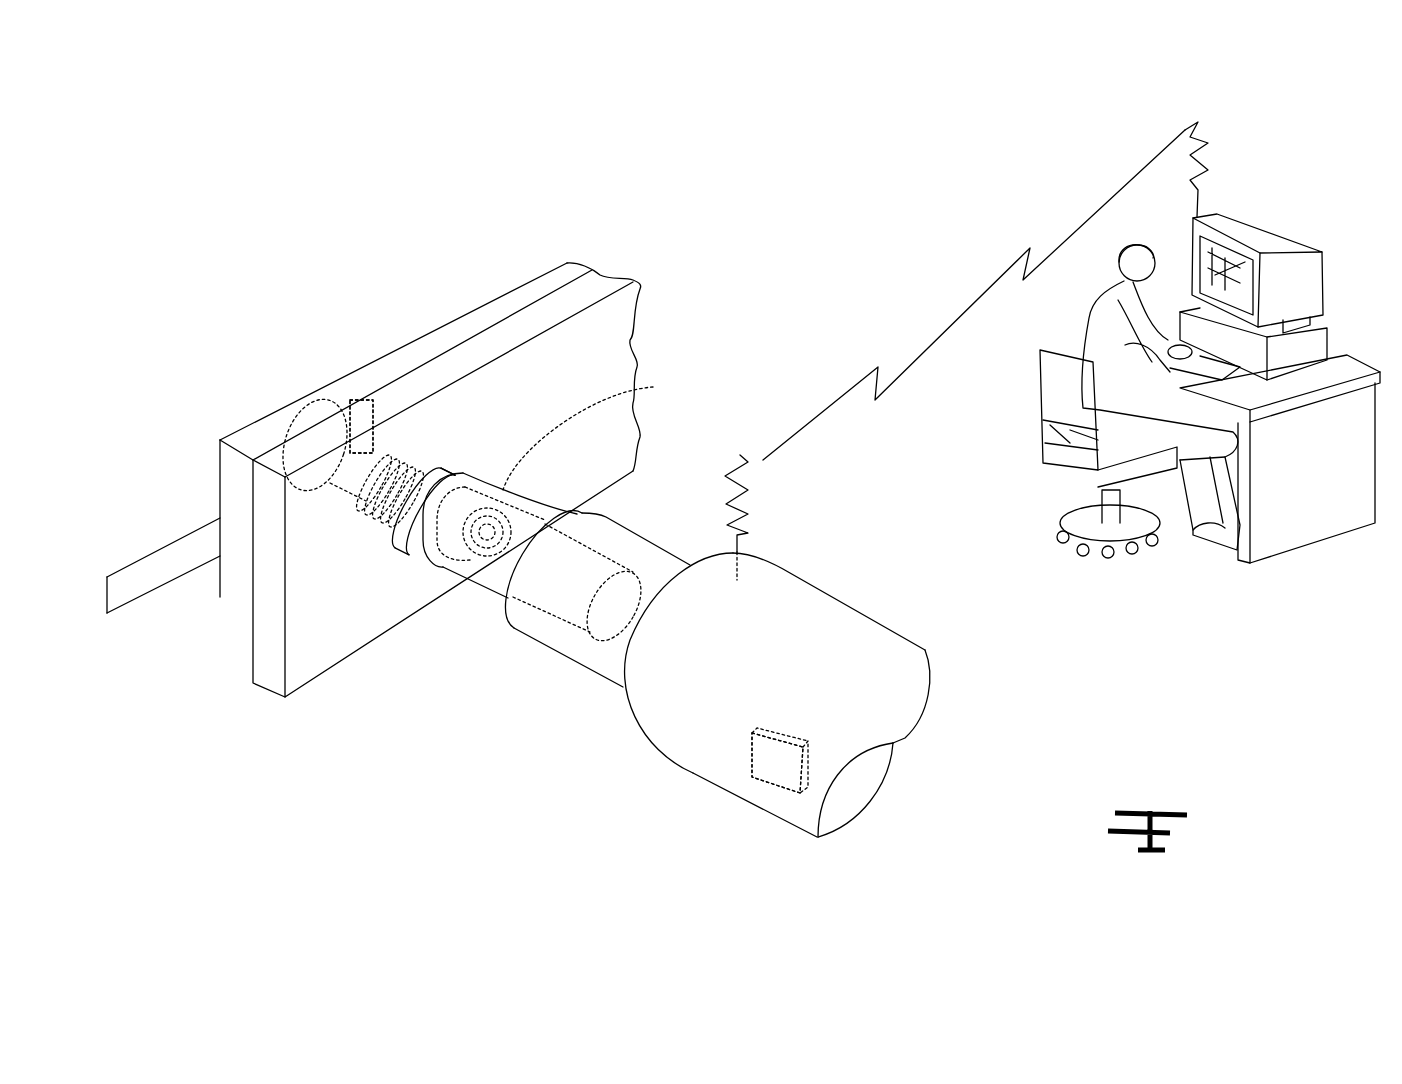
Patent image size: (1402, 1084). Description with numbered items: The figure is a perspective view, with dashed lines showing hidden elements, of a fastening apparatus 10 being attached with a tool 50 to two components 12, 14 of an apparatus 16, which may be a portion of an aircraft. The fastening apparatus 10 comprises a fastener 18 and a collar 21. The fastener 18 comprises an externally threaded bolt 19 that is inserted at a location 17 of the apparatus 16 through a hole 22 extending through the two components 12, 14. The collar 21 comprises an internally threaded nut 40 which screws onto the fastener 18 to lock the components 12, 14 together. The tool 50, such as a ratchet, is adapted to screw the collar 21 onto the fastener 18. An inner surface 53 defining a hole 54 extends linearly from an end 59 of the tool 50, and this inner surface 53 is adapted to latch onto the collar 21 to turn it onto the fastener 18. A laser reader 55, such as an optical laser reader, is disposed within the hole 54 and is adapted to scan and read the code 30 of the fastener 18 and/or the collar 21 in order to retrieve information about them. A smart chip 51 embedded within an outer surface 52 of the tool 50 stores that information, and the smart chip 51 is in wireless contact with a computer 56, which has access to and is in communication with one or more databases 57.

The fastening apparatus 10 is at (250, 312).
The component 12 is at (227, 421).
The component 14 is at (612, 327).
The apparatus 16 is at (238, 582).
The location 17 is at (347, 407).
The fastener 18 is at (355, 400).
The externally threaded bolt 19 is at (361, 426).
The collar 21 is at (434, 575).
The hole 22 is at (383, 452).
The code 30 is at (487, 572).
The internally threaded nut 40 is at (423, 530).
The tool 50 is at (700, 743).
The smart chip 51 is at (770, 777).
The outer surface 52 is at (777, 763).
The inner surface 53 is at (503, 490).
The hole 54 is at (578, 438).
The laser reader 55 is at (563, 593).
The computer 56 is at (1298, 298).
The database 57 is at (1238, 237).
The end 59 is at (453, 473).